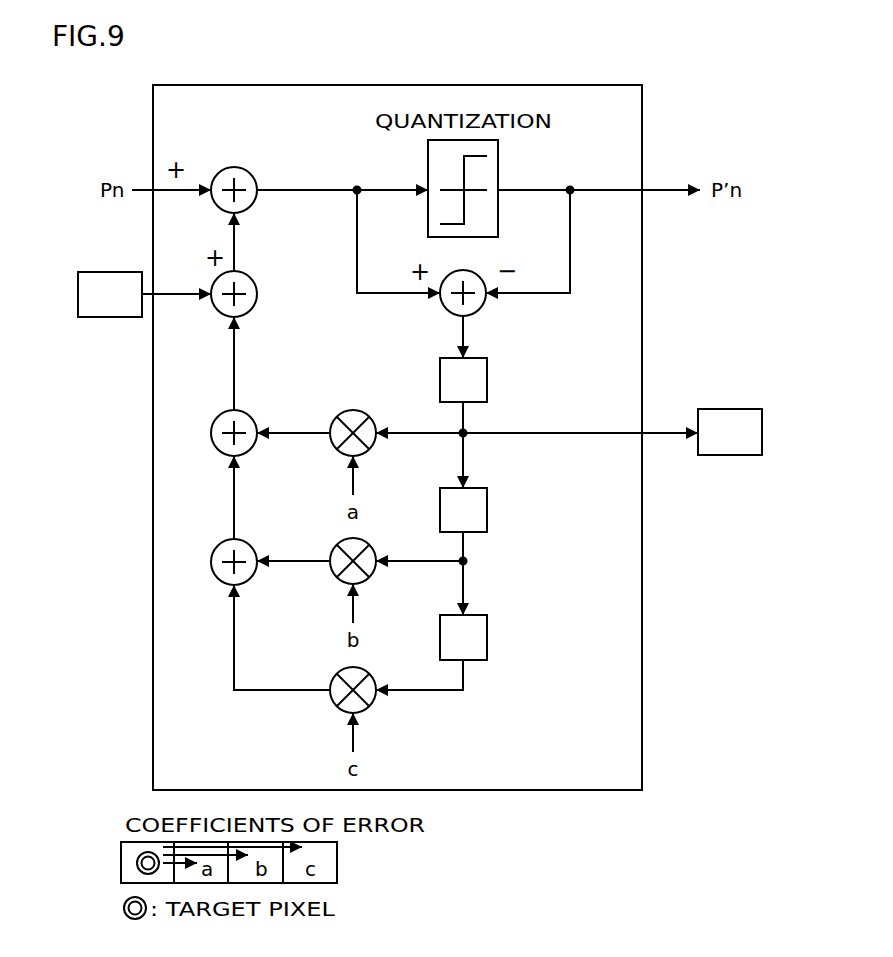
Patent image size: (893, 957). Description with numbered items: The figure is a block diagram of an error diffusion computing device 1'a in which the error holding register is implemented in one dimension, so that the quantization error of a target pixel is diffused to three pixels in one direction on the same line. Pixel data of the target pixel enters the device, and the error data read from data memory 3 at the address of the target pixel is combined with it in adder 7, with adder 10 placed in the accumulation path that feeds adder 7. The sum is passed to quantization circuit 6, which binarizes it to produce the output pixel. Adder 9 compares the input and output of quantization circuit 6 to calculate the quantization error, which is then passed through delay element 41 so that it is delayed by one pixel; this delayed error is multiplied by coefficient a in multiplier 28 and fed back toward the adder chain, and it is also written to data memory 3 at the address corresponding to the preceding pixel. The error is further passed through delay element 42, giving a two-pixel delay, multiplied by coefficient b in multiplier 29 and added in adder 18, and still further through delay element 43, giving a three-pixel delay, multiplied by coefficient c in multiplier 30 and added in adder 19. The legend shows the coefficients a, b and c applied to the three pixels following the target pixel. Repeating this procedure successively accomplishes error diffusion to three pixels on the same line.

The error diffusion computing device 1'a is at (430, 437).
The data memory 3 is at (112, 317).
The quantization circuit 6 is at (498, 173).
The adder 7 is at (251, 174).
The adder 9 is at (479, 311).
The adder 10 is at (251, 278).
The adder 18 is at (251, 417).
The adder 19 is at (251, 546).
The multiplier 28 is at (371, 418).
The multiplier 29 is at (371, 546).
The multiplier 30 is at (371, 675).
The delay element 41 is at (488, 378).
The delay element 42 is at (488, 508).
The delay element 43 is at (488, 637).